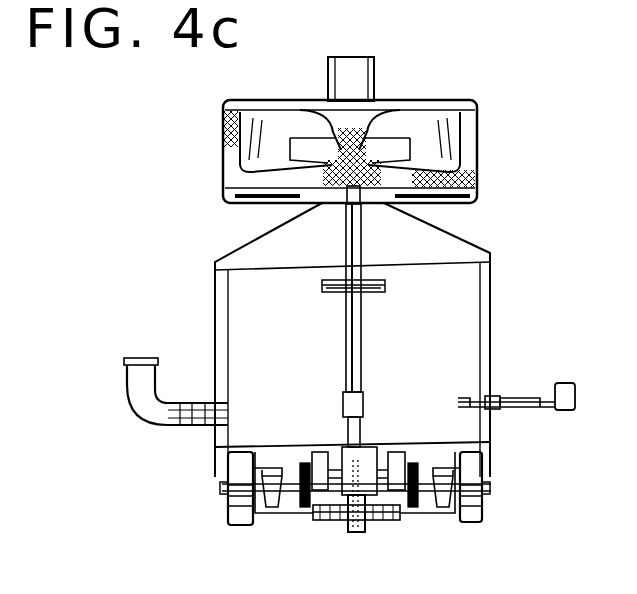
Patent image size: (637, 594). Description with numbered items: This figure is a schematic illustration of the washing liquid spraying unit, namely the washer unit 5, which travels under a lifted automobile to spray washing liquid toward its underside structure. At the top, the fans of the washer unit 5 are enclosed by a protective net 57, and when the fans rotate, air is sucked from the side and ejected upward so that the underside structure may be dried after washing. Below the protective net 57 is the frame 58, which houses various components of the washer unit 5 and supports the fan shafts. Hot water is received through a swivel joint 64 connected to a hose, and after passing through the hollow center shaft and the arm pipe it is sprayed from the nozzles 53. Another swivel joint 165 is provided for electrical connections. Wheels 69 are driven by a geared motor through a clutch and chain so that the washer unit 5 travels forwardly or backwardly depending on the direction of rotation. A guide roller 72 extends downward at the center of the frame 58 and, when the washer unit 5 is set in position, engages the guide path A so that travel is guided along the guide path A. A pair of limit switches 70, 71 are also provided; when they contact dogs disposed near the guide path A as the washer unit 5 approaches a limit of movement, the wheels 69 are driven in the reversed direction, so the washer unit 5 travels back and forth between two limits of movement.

The nozzles 53 is at (345, 57).
The protective net 57 is at (478, 176).
The washer unit 5 is at (465, 293).
The frame 58 is at (465, 341).
The swivel joint 64 is at (567, 400).
The swivel joint 165 is at (150, 413).
The wheels 69 is at (228, 510).
The limit switch 71 is at (302, 510).
The guide path A is at (348, 522).
The guide roller 72 is at (362, 528).
The limit switch 70 is at (416, 498).